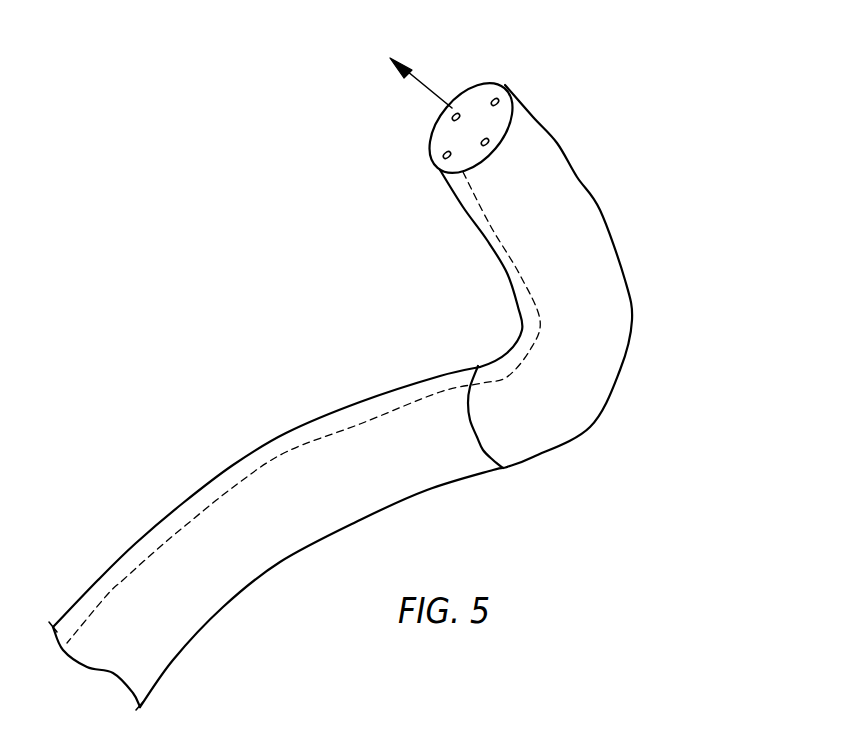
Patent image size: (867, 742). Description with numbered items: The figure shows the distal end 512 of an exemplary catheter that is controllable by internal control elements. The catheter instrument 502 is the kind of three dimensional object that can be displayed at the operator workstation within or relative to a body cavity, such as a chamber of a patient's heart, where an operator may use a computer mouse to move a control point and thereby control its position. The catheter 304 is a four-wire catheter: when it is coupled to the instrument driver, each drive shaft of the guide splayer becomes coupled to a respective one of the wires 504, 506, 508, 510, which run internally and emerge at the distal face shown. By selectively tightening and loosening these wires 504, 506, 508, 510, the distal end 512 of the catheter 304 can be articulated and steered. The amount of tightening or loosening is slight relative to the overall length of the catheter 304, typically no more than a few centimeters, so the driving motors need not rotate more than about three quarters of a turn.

The 4-wire catheter 304 is at (283, 540).
The catheter instrument 502 is at (583, 247).
The wire 504 is at (497, 235).
The wire 506 is at (452, 118).
The wire 508 is at (492, 100).
The wire 510 is at (489, 142).
The distal end 512 is at (635, 90).